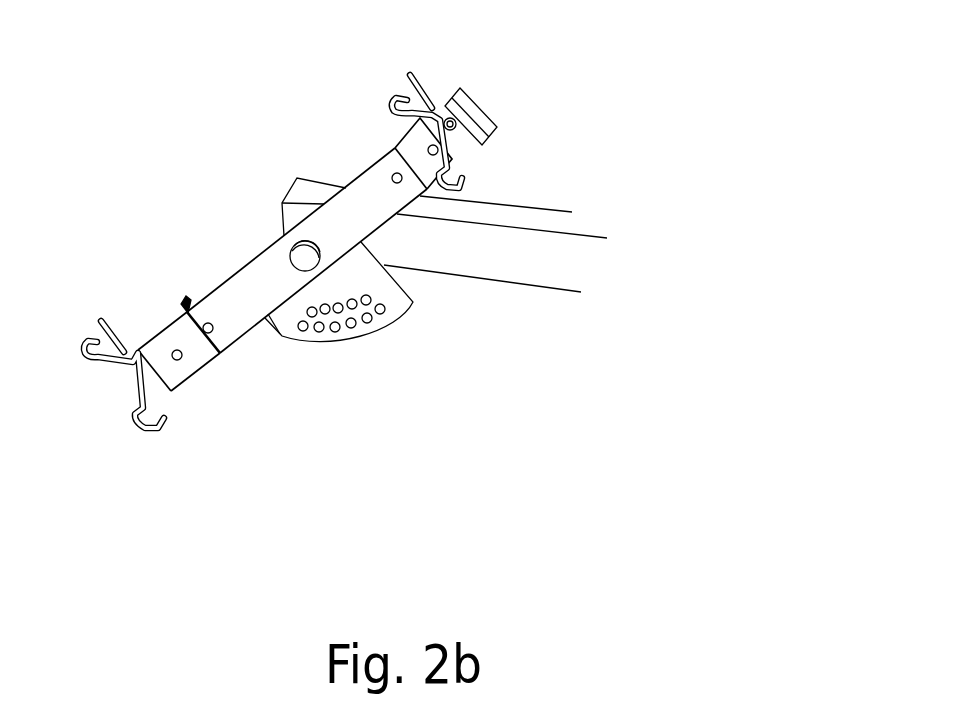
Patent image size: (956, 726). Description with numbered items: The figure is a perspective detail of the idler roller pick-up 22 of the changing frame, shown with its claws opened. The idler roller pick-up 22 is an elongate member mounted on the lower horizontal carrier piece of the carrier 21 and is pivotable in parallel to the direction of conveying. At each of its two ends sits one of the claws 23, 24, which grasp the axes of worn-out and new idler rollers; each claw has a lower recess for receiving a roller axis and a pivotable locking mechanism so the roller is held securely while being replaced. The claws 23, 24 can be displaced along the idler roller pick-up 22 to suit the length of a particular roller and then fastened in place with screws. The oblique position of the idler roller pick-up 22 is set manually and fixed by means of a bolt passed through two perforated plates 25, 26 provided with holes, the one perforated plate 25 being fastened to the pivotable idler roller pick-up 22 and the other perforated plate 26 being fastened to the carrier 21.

The carrier 21 is at (530, 204).
The idler roller pick-up 22 is at (291, 233).
The claw 23 is at (503, 77).
The claw 24 is at (176, 396).
The perforated plate 25 is at (392, 325).
The perforated plate 26 is at (362, 389).